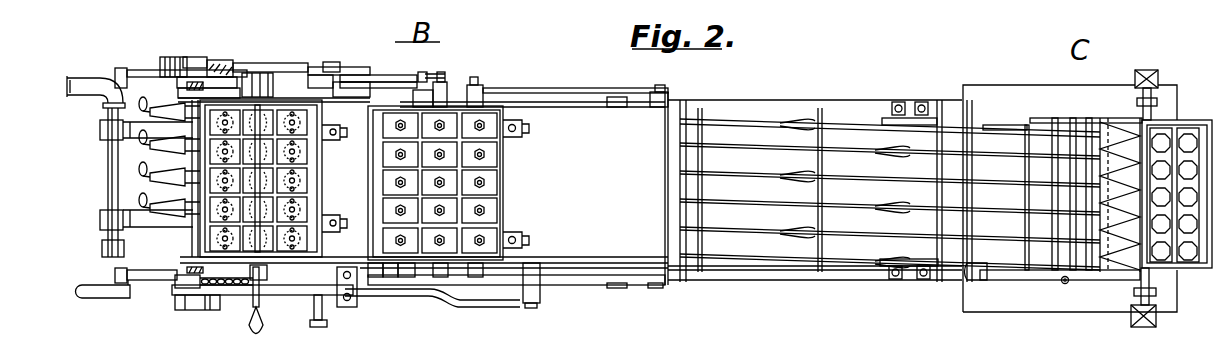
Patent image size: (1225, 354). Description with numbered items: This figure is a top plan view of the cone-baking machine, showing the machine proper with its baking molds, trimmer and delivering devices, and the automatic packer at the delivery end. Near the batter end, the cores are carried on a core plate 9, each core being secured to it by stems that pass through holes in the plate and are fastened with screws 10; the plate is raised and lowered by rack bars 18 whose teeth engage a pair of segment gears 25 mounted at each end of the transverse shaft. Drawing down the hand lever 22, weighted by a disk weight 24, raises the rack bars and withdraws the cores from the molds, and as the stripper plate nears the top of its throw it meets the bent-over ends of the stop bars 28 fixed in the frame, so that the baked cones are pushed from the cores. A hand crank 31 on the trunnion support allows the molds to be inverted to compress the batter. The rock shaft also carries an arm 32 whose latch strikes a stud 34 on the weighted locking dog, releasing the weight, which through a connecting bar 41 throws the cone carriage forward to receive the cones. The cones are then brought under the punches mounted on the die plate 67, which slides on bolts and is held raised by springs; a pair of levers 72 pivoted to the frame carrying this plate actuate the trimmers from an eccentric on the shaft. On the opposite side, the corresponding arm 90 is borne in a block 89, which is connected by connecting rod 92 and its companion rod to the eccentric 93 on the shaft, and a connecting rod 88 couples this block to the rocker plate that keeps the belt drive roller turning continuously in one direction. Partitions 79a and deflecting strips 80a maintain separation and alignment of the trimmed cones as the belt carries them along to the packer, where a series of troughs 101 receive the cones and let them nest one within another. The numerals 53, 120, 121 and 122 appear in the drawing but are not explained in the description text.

The core plate 9 is at (279, 140).
The screws 10 is at (292, 208).
The rack bars 18 is at (267, 275).
The hand lever 22 is at (291, 295).
The disk weight 24 is at (190, 302).
The segment gears 25 is at (127, 68).
The stop bars 28 is at (187, 86).
The hand crank 31 is at (252, 322).
The arm 32 is at (128, 292).
The stud 34 is at (320, 320).
The connecting bar 41 is at (457, 297).
The support 53 is at (631, 348).
The die plate 67 is at (472, 202).
The levers 72 is at (390, 277).
The partitions 79a is at (752, 292).
The deflecting strips 80a is at (890, 143).
The connecting rod 88 is at (347, 77).
The block 89 is at (447, 83).
The arm 90 is at (477, 88).
The connecting rod 92 is at (253, 63).
The eccentric 93 is at (197, 60).
The troughs 101 is at (978, 140).
The mold frame 120 is at (1183, 190).
The octagonal hole plate 121 is at (1183, 190).
The mold column 122 is at (1190, 197).